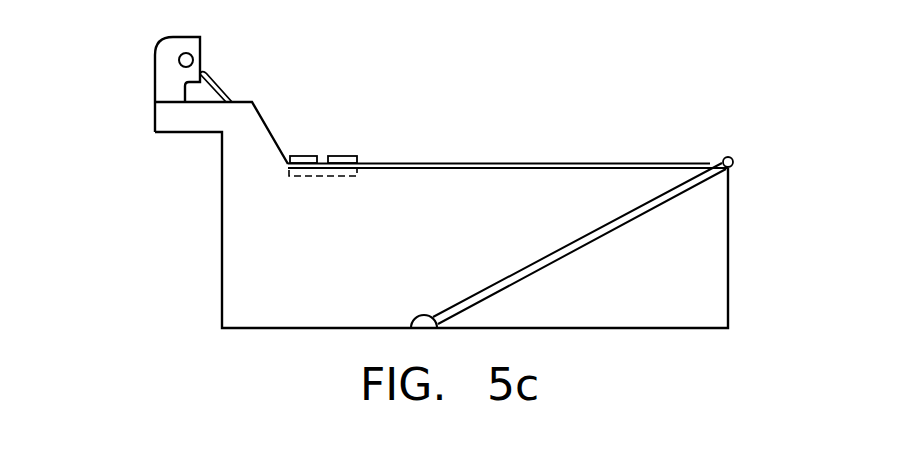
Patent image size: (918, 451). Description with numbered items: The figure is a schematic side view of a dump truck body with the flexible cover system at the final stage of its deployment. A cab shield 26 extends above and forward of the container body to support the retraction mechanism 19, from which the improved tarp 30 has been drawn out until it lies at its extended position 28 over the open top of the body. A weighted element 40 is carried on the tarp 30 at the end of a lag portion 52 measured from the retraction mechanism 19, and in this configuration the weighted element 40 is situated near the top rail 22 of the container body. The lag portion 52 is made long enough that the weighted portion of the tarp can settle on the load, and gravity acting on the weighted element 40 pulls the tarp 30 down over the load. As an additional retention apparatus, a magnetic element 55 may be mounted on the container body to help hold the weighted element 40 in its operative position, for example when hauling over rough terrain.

The retraction mechanism 19 is at (165, 52).
The top rail 22 is at (413, 168).
The cab shield 26 is at (198, 133).
The extended position 28 is at (733, 155).
The improved tarp 30 is at (630, 162).
The weighted element 40 is at (341, 117).
The lag portion 52 is at (213, 83).
The magnetic element 55 is at (322, 176).